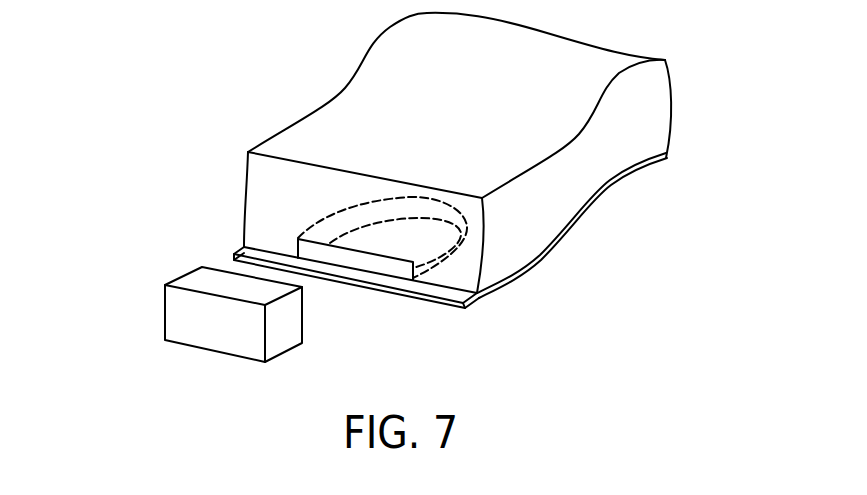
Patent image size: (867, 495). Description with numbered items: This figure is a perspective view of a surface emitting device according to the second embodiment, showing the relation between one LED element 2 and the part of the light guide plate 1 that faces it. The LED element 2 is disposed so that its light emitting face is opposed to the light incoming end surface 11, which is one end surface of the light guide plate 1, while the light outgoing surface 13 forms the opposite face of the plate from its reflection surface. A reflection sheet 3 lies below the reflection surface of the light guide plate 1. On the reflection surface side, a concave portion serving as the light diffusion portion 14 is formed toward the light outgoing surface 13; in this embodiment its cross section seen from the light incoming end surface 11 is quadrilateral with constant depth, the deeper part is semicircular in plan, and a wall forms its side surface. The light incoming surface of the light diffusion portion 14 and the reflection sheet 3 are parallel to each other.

The light guide plate 1 is at (455, 183).
The LED element 2 is at (165, 312).
The reflection sheet 3 is at (235, 252).
The light incoming end surface 11 is at (463, 267).
The light outgoing surface 13 is at (345, 107).
The light diffusion portion 14 is at (358, 257).